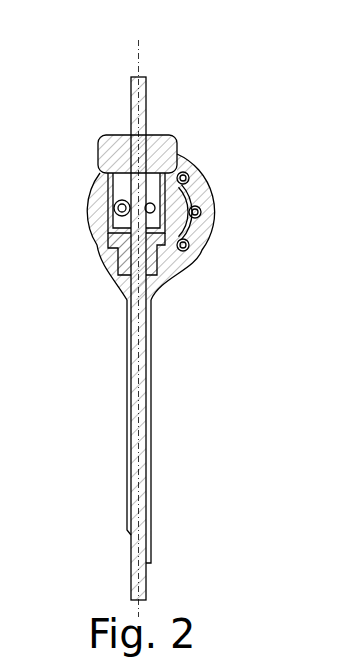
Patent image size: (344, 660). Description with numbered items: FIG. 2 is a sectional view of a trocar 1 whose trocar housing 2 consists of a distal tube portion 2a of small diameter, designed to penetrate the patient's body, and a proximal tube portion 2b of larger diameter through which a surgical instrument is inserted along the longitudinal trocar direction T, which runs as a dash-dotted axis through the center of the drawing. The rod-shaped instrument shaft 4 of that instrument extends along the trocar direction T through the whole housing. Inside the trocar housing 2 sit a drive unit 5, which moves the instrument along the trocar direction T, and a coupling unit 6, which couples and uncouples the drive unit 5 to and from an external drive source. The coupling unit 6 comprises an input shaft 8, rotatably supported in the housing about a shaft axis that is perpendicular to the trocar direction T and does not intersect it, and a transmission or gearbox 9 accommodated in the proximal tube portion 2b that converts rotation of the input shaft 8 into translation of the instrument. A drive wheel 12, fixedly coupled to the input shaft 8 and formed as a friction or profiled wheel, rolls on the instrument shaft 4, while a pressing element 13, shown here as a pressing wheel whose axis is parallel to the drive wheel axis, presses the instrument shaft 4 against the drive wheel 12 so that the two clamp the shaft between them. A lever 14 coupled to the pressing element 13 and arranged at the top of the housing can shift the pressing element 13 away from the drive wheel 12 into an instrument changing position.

The trocar 1 is at (232, 172).
The trocar housing 2 is at (194, 368).
The distal tube portion 2a is at (151, 350).
The proximal tube portion 2b is at (170, 218).
The instrument shaft 4 is at (139, 117).
The drive unit 5 is at (96, 219).
The coupling unit 6 is at (114, 243).
The input shaft 8 is at (157, 204).
The transmission/gearbox 9 is at (158, 195).
The drive wheel 12 is at (186, 212).
The pressing element 13 is at (114, 208).
The lever 14 is at (96, 156).
The longitudinal trocar direction T is at (140, 53).